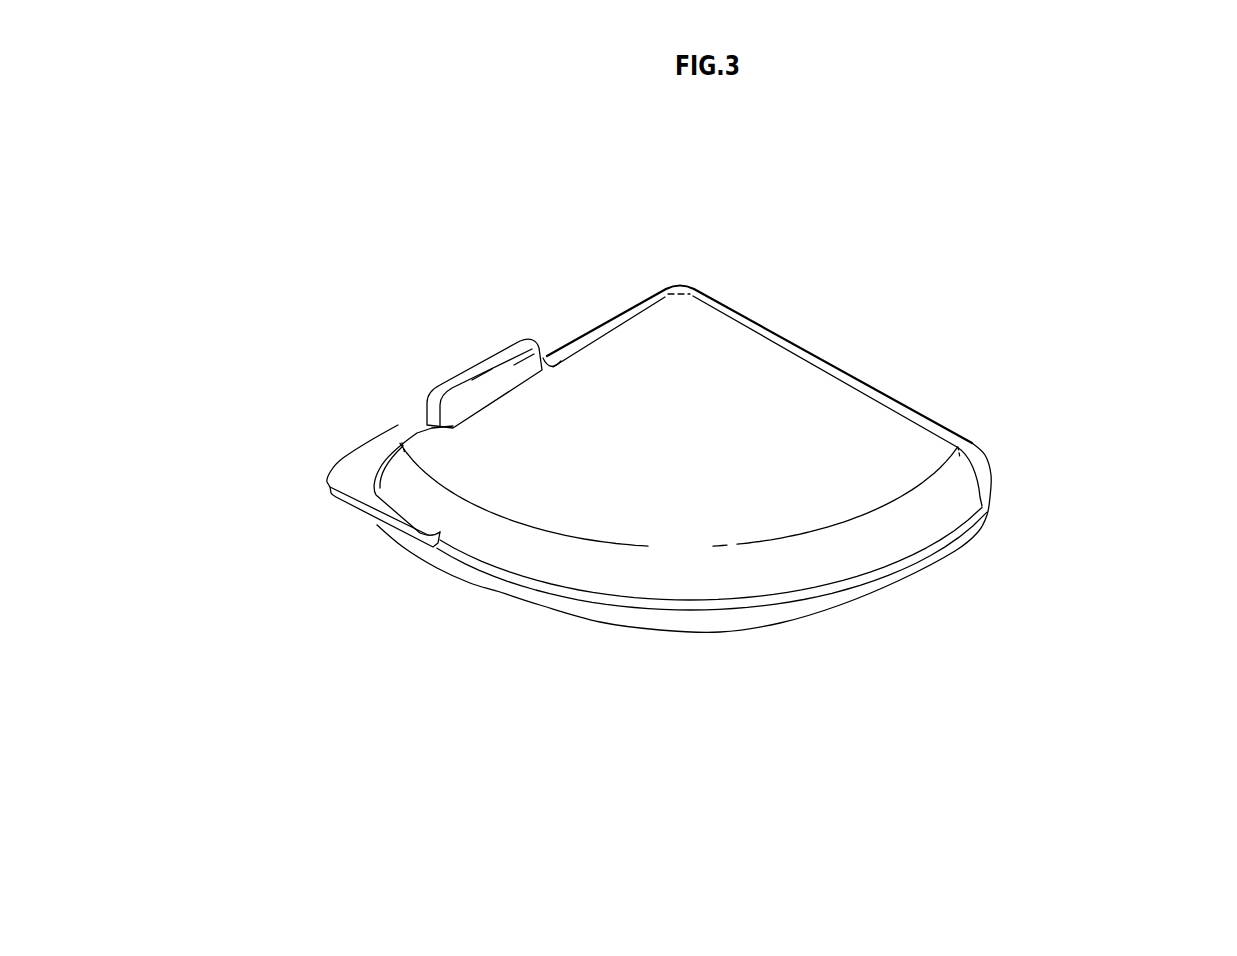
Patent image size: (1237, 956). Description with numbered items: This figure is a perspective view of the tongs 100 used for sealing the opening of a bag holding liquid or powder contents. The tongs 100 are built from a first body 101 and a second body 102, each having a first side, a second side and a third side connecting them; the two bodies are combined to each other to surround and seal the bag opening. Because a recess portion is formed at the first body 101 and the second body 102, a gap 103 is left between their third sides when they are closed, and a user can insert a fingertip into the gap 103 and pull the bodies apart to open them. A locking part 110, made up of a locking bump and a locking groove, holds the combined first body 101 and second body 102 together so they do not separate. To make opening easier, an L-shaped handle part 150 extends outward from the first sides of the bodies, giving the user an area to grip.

The tongs 100 is at (804, 465).
The first body 101 is at (738, 630).
The second body 102 is at (880, 477).
The gap 103 is at (467, 562).
The locking part 110 is at (471, 365).
The handle part 150 is at (352, 467).